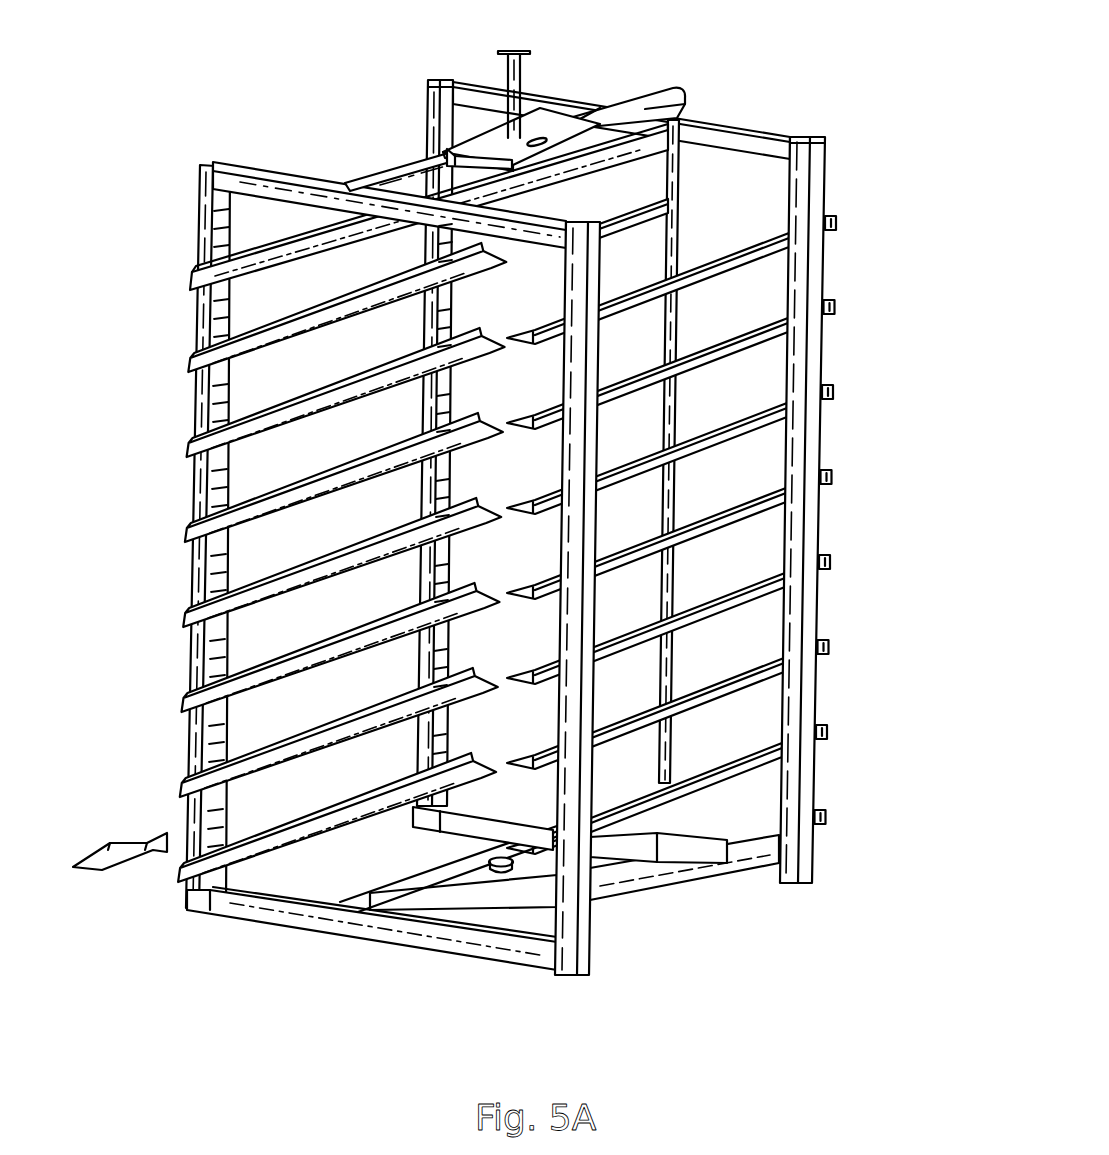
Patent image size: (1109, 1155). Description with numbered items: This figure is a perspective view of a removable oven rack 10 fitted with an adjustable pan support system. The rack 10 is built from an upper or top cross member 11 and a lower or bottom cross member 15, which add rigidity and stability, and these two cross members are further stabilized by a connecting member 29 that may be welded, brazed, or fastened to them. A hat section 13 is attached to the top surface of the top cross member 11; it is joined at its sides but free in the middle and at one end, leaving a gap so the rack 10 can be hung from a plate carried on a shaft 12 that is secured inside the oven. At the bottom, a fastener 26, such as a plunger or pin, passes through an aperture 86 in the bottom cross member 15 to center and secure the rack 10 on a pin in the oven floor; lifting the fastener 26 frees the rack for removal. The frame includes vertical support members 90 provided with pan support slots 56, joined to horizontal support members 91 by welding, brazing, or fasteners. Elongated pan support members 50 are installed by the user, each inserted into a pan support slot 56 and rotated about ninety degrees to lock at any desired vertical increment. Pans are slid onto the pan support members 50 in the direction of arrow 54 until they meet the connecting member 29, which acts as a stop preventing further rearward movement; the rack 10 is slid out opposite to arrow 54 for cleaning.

The oven rack 10 is at (527, 517).
The top cross member 11 is at (382, 180).
The shaft 12 is at (503, 73).
The hat section 13 is at (587, 128).
The bottom cross member 15 is at (455, 876).
The fastener 26 is at (483, 870).
The connecting member 29 is at (677, 197).
The pan support member 50 is at (190, 300).
The arrow 54 is at (93, 857).
The pan support slot 56 is at (227, 466).
The aperture 86 is at (505, 868).
The vertical support member 90 is at (817, 712).
The horizontal support member 91 is at (255, 165).